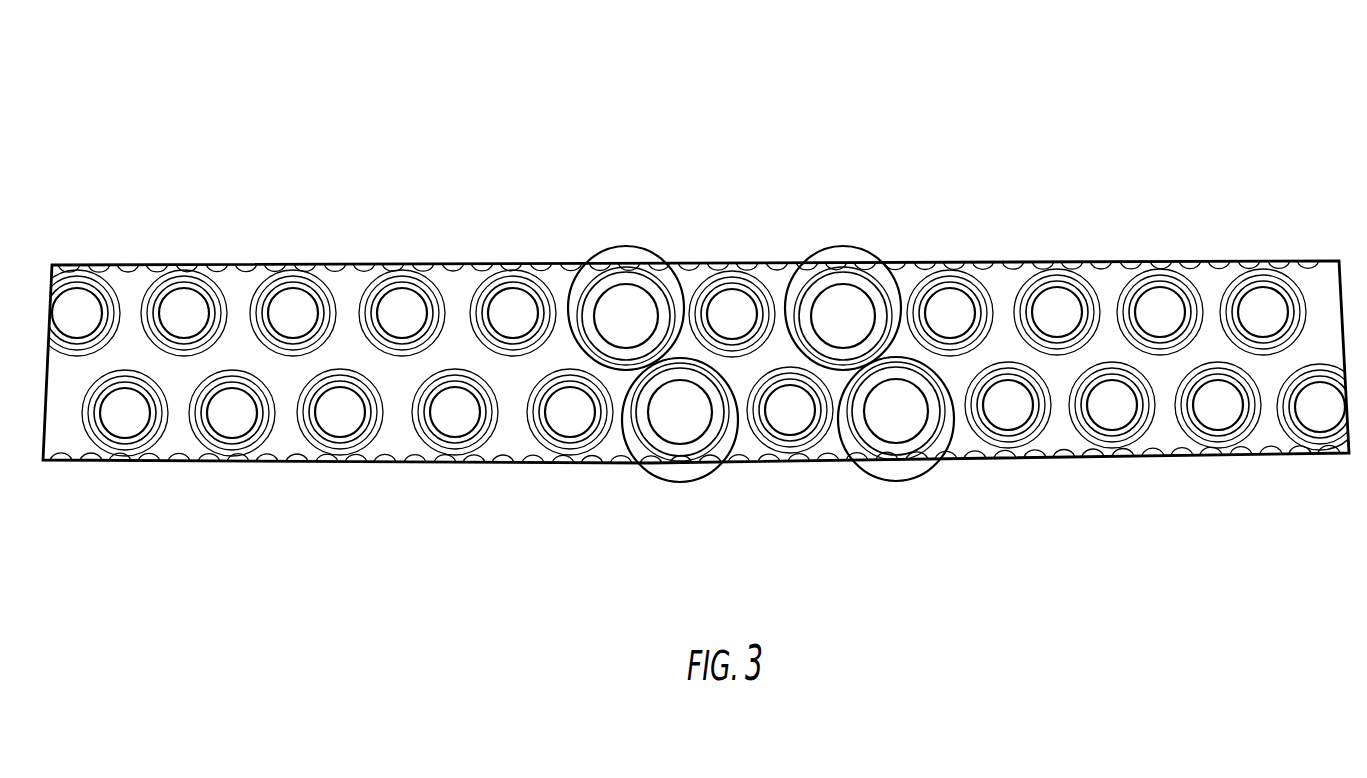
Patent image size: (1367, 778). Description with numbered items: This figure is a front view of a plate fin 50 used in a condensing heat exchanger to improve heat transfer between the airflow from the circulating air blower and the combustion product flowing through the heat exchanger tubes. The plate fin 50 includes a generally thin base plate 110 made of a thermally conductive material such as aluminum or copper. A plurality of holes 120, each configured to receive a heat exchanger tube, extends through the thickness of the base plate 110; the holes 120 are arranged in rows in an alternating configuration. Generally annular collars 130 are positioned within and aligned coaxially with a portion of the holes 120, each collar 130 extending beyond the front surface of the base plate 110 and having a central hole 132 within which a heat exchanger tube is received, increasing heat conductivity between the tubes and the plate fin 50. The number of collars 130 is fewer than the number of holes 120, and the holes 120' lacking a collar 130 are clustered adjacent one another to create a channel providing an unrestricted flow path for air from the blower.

The plate fin 50 is at (187, 120).
The base plate 110 is at (1110, 290).
The holes 120 is at (698, 419).
The holes without collars 120' is at (761, 361).
The annular collar 130 is at (490, 285).
The central hole 132 is at (516, 305).